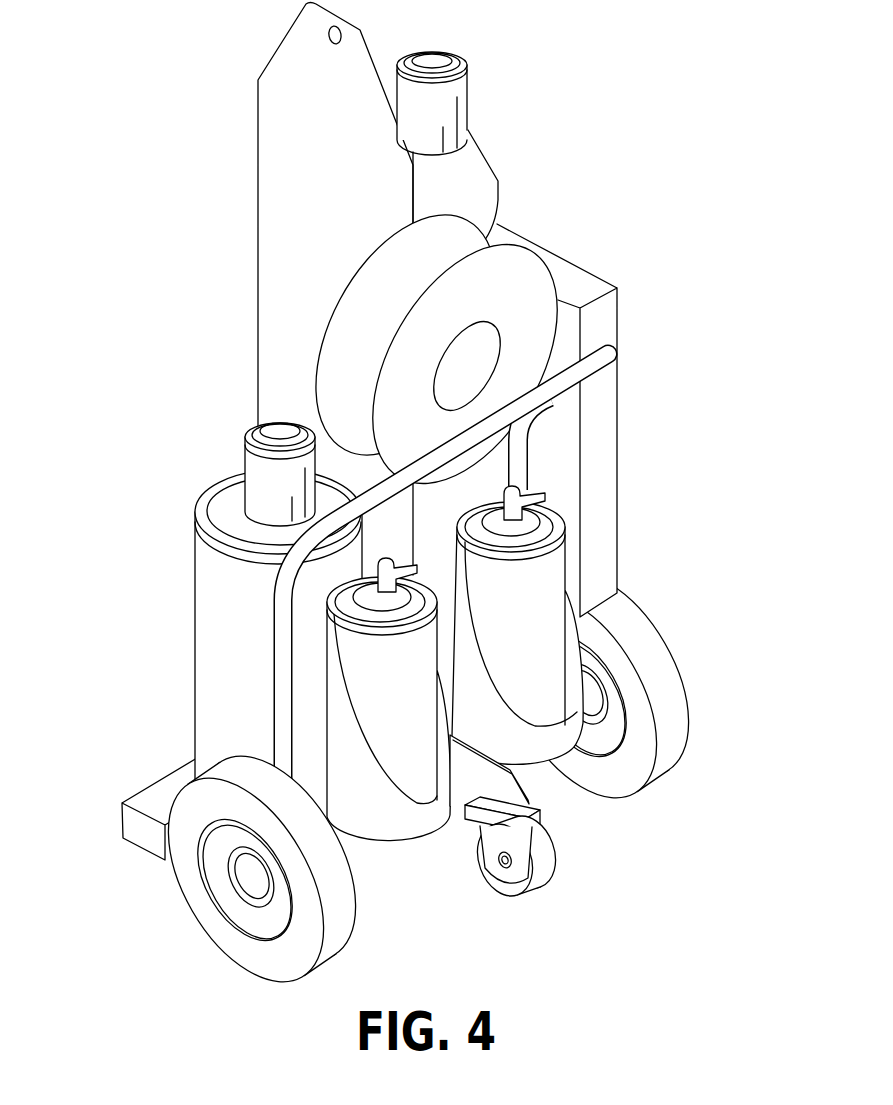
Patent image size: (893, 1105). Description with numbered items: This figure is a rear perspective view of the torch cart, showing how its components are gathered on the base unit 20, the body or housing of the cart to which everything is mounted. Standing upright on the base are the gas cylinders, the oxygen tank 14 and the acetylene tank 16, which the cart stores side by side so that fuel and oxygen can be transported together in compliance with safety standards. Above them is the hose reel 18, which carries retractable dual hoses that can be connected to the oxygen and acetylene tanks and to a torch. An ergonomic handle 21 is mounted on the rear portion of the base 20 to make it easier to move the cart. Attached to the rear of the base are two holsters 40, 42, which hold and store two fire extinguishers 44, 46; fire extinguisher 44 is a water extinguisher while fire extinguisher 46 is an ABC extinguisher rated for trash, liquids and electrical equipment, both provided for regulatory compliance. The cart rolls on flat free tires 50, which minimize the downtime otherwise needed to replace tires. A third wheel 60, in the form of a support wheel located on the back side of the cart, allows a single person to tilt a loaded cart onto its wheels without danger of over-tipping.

The oxygen tank 14 is at (213, 632).
The acetylene tank 16 is at (475, 188).
The hose reel 18 is at (530, 276).
The base unit 20 is at (172, 441).
The handle 21 is at (612, 349).
The holster 40 is at (430, 827).
The holster 42 is at (555, 743).
The fire extinguisher 44 is at (404, 697).
The fire extinguisher 46 is at (539, 613).
The flat free tires 50 is at (212, 922).
The third wheel 60 is at (545, 866).